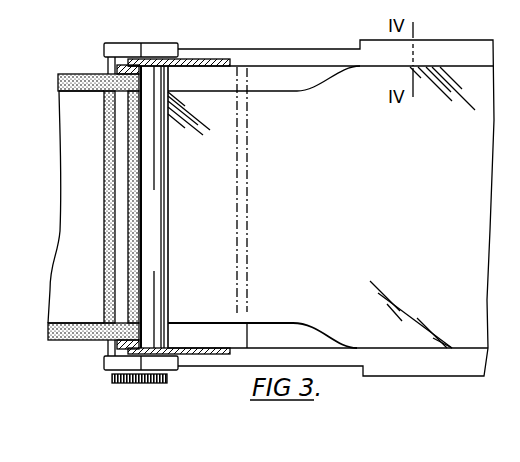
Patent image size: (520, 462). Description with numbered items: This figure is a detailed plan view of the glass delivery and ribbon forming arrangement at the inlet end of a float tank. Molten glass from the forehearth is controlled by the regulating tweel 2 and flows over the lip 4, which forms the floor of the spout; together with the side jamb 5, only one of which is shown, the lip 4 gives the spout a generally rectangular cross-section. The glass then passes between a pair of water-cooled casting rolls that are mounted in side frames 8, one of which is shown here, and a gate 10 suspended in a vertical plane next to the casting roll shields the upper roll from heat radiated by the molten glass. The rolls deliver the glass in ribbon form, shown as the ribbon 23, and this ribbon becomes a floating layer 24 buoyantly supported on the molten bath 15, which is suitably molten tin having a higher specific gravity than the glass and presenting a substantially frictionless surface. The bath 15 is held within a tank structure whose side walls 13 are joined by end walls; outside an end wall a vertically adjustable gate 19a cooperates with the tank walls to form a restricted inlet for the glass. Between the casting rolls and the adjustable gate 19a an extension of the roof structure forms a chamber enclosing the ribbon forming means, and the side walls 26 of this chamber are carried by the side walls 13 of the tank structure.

The regulating tweel 2 is at (103, 110).
The lip 4 is at (90, 180).
The side jamb 5 is at (75, 80).
The side frame 8 is at (123, 52).
The gate 10 is at (128, 128).
The side wall 13 is at (233, 58).
The molten bath 15 is at (264, 78).
The vertically adjustable gate 19a is at (243, 138).
The ribbon 23 is at (213, 201).
The floating layer 24 is at (369, 202).
The chamber side wall 26 is at (193, 59).